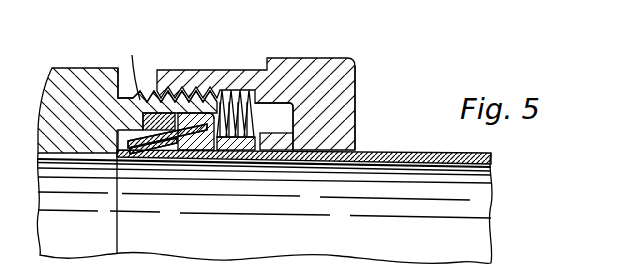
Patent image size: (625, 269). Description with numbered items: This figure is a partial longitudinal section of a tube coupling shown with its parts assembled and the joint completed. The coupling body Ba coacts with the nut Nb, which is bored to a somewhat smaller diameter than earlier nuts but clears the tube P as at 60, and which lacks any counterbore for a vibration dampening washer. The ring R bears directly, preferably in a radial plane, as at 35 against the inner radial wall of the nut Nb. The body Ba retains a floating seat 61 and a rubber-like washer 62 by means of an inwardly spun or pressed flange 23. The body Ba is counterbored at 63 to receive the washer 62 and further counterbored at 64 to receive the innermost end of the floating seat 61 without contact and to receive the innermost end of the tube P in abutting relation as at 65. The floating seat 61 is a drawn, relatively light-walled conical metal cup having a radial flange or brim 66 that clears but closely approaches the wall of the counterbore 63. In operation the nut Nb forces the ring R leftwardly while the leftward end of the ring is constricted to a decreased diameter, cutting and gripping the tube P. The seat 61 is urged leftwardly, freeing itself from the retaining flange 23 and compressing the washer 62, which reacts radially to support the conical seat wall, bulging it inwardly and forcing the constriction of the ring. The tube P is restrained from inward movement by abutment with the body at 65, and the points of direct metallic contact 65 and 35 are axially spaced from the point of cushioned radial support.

The coupling body Ba is at (63, 87).
The counterbore 64 is at (117, 108).
The counterbore 63 is at (162, 96).
The rubber-like washer 62 is at (155, 100).
The floating seat 61 is at (170, 113).
The radial flange or brim 66 is at (203, 117).
The inwardly spun or pressed flange 23 is at (213, 115).
The ring R is at (253, 128).
The radial bearing plane 35 is at (285, 135).
The nut Nb is at (338, 63).
The bore clearance 60 is at (356, 124).
The abutment 65 is at (118, 160).
The tube P is at (470, 202).